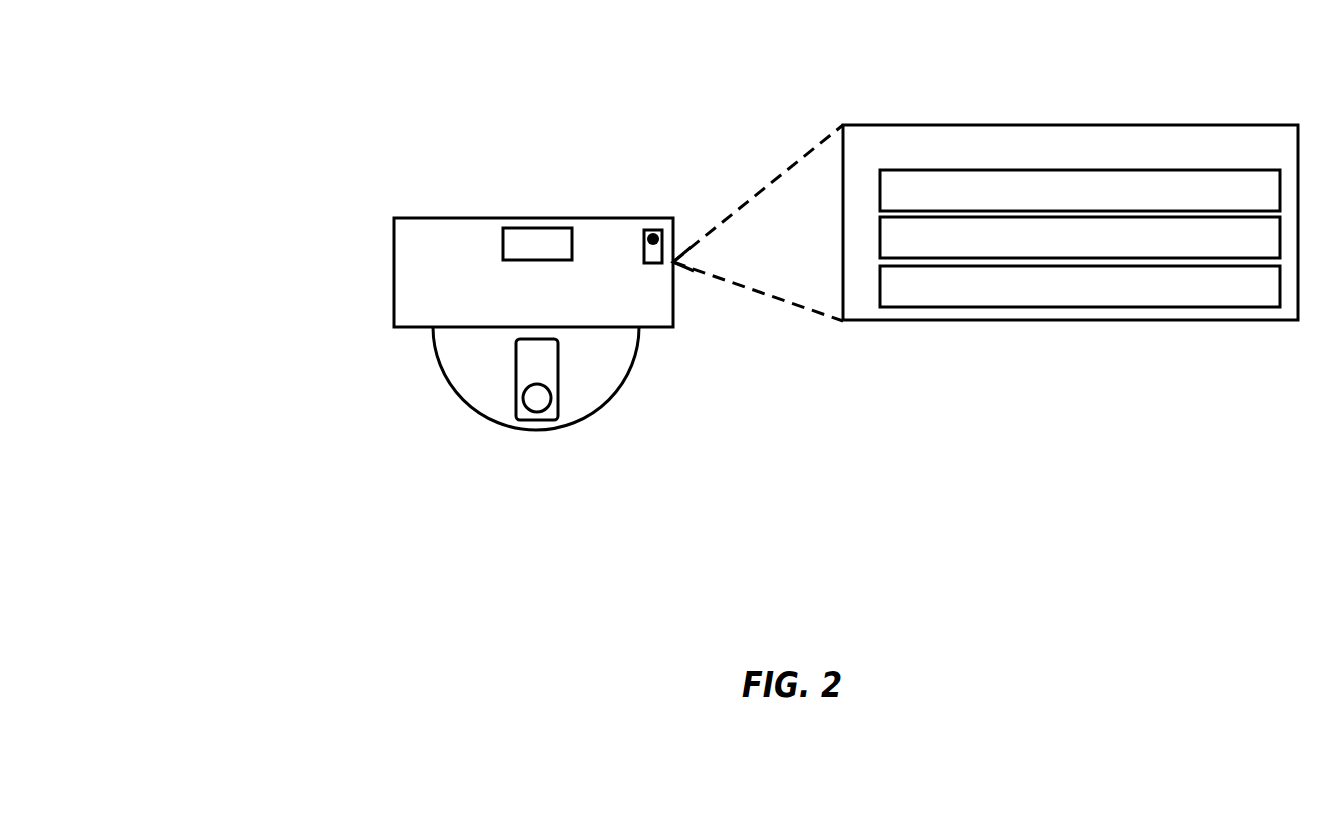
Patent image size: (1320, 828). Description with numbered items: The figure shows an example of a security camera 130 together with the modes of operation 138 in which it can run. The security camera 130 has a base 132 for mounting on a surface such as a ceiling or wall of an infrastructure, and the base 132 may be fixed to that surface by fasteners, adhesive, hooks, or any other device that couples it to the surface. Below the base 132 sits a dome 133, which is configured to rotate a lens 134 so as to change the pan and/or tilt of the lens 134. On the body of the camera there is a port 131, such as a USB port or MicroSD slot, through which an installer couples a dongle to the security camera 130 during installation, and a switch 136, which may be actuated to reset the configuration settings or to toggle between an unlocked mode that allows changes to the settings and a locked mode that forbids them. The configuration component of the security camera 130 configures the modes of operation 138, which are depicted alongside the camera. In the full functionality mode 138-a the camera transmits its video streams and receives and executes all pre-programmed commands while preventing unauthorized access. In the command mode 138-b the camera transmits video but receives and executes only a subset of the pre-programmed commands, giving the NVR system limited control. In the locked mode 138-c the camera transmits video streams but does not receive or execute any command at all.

The security camera 130 is at (281, 112).
The port 131 is at (538, 227).
The base 132 is at (395, 280).
The dome 133 is at (436, 357).
The lens 134 is at (524, 405).
The switch 136 is at (650, 230).
The modes of operation 138 is at (1232, 157).
The full functionality mode 138-a is at (1243, 203).
The command mode 138-b is at (1208, 250).
The locked mode 138-c is at (1192, 298).